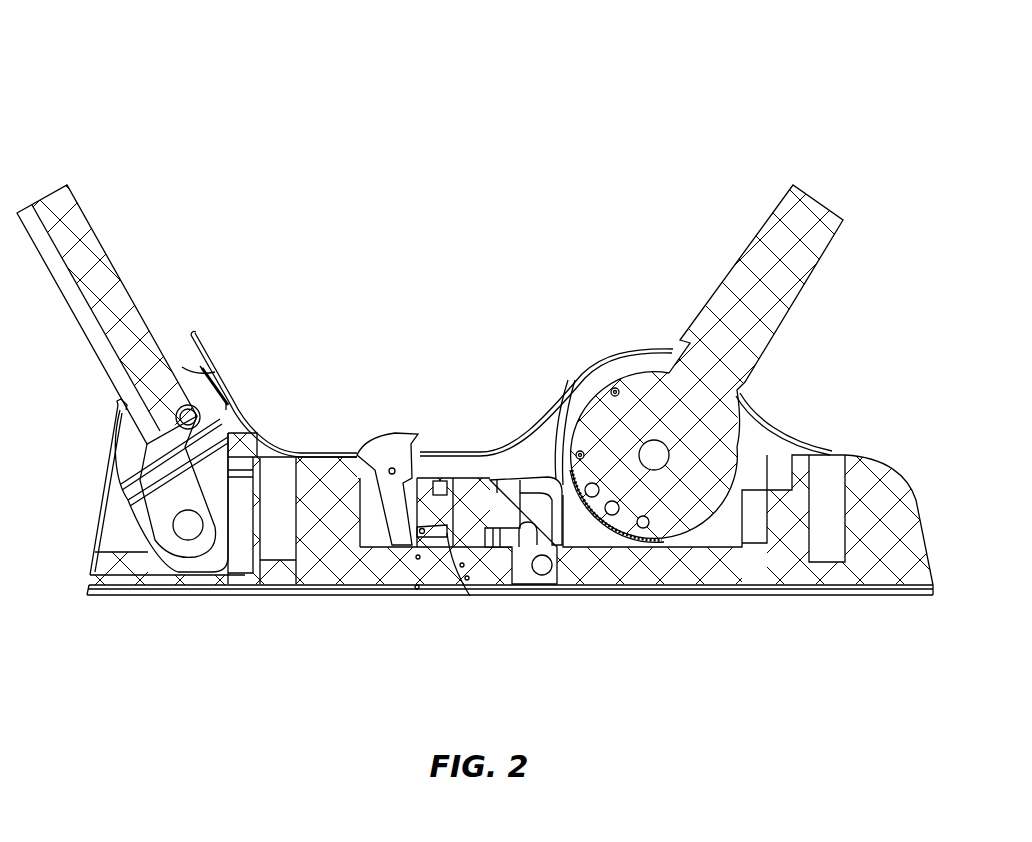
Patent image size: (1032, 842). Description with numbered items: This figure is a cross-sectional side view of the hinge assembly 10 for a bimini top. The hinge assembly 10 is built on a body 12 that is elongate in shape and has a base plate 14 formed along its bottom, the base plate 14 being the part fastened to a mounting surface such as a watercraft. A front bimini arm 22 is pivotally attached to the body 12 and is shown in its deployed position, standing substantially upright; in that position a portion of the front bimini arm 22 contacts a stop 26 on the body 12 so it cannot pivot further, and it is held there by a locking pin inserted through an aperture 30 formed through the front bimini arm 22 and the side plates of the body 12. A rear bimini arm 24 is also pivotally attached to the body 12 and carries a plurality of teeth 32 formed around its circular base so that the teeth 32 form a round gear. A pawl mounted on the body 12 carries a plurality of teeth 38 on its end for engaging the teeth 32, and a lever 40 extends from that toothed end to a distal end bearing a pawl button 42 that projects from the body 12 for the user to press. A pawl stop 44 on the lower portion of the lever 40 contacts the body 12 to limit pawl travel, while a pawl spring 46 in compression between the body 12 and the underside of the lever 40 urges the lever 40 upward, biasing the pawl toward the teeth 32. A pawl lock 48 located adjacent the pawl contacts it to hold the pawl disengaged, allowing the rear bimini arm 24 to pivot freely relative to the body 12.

The hinge assembly 10 is at (430, 224).
The body 12 is at (856, 455).
The base plate 14 is at (207, 597).
The front bimini arm 22 is at (97, 233).
The rear bimini arm 24 is at (797, 297).
The stop 26 is at (229, 428).
The aperture 30 is at (187, 405).
The plurality of teeth 32 is at (607, 522).
The plurality of teeth 38 is at (565, 470).
The lever 40 is at (504, 470).
The pawl button 42 is at (392, 432).
The pawl stop 44 is at (419, 545).
The pawl spring 46 is at (418, 532).
The pawl lock 48 is at (441, 480).